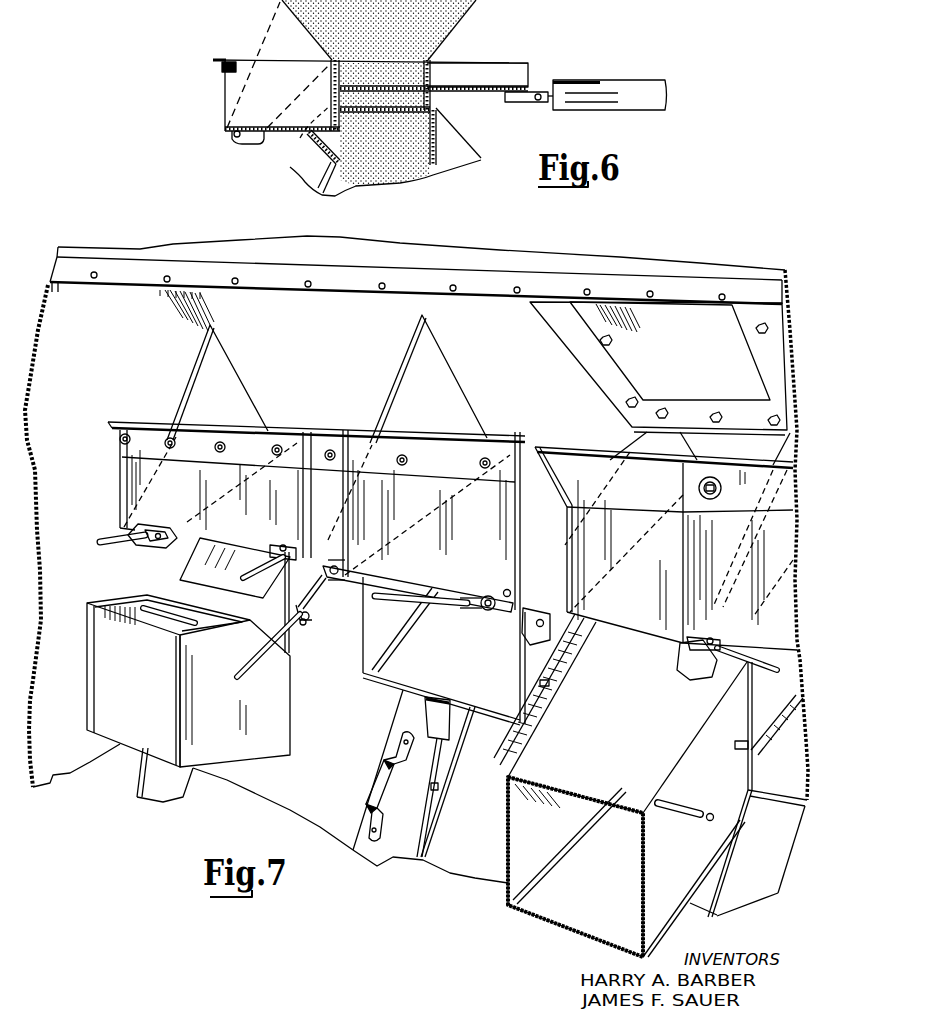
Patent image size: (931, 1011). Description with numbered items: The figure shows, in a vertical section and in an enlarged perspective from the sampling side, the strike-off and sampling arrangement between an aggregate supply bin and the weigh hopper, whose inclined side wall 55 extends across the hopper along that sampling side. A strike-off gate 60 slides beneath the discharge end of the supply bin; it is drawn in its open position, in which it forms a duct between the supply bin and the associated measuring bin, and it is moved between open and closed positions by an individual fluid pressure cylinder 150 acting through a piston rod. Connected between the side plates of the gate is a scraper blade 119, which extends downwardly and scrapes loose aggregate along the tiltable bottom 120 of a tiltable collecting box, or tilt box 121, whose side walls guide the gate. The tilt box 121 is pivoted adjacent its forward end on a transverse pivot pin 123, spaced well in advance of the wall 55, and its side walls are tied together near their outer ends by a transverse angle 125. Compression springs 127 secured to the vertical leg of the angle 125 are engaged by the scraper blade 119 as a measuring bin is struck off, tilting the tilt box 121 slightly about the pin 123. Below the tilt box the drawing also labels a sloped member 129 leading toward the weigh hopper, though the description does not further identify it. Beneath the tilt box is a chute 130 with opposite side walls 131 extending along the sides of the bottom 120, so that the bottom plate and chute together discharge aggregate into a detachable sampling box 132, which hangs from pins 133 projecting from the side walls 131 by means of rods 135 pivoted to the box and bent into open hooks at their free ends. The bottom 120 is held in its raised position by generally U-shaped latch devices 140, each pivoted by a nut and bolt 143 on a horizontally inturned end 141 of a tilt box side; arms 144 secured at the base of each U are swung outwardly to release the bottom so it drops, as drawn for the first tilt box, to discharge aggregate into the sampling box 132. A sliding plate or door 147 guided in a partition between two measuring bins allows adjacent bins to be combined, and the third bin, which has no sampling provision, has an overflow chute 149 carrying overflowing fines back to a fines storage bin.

In FIG. 6, the inclined side wall 55 is at (336, 186).
In FIG. 7, the inclined side wall 55 is at (458, 863).
In FIG. 6, the strike-off gate 60 is at (513, 61).
In FIG. 6, the scraper blade 119 is at (300, 138).
In FIG. 7, the scraper blade 119 is at (190, 543).
In FIG. 6, the tiltable bottom 120 is at (263, 134).
In FIG. 7, the tiltable bottom 120 is at (181, 577).
In FIG. 7, the tilt box 121 is at (120, 475).
In FIG. 6, the pivot pin 123 is at (232, 139).
In FIG. 7, the pivot pin 123 is at (545, 627).
In FIG. 6, the transverse angle 125 is at (216, 60).
In FIG. 7, the transverse angle 125 is at (283, 431).
In FIG. 6, the compression springs 127 is at (240, 62).
In FIG. 6, the spout 129 is at (322, 185).
In FIG. 7, the chute 130 is at (316, 612).
In FIG. 7, the side walls 131 is at (367, 637).
In FIG. 7, the sampling box 132 is at (142, 748).
In FIG. 7, the pins 133 is at (304, 626).
In FIG. 7, the rods 135 is at (255, 657).
In FIG. 7, the latch device 140 is at (483, 593).
In FIG. 7, the inturned end 141 is at (273, 550).
In FIG. 7, the nut and bolt 143 is at (289, 548).
In FIG. 7, the arms 144 is at (118, 537).
In FIG. 7, the sliding plate or door 147 is at (377, 866).
In FIG. 7, the overflow chute 149 is at (547, 913).
In FIG. 6, the fluid pressure cylinder 150 is at (643, 80).